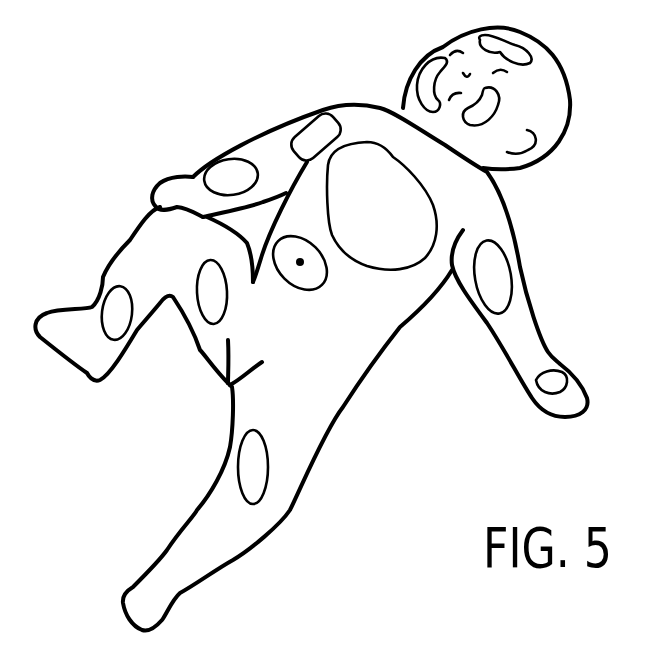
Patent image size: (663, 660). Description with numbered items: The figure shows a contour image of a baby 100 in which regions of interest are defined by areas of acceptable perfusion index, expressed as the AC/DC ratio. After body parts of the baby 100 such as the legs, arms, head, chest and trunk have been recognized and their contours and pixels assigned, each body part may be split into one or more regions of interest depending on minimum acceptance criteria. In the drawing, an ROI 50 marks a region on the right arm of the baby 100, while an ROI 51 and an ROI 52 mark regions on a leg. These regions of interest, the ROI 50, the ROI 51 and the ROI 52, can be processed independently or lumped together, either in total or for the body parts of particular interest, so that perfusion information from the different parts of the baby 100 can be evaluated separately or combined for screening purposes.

The baby 100 is at (547, 214).
The ROI of the right arm 50 is at (330, 123).
The ROI of a leg 51 is at (247, 492).
The ROI of a leg 52 is at (115, 298).